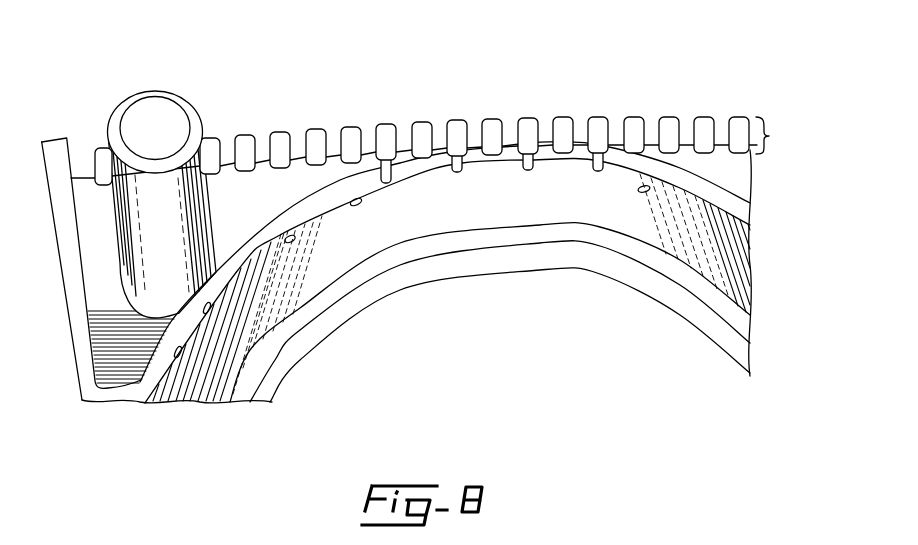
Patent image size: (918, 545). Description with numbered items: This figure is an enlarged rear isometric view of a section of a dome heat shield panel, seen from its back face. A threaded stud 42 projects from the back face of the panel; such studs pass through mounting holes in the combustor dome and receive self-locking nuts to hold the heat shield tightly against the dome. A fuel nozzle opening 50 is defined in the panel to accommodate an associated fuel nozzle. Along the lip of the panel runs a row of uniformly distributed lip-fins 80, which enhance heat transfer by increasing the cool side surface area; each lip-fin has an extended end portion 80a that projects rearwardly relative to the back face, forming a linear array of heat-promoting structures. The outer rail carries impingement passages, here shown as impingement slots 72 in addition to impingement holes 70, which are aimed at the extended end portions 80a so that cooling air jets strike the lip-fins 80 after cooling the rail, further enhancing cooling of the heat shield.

The threaded stud 42 is at (158, 111).
The fuel nozzle opening 50 is at (430, 221).
The impingement holes 70 is at (643, 193).
The impingement slots 72 is at (456, 157).
The lip-fins 80 is at (740, 122).
The extended end portion 80a is at (668, 133).